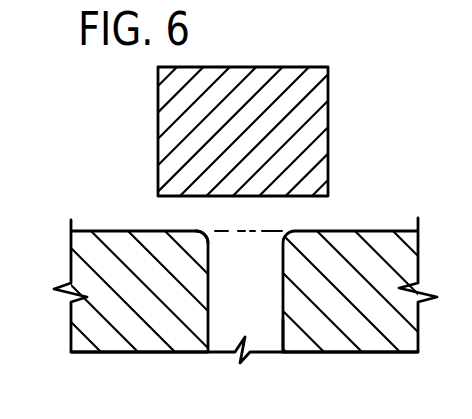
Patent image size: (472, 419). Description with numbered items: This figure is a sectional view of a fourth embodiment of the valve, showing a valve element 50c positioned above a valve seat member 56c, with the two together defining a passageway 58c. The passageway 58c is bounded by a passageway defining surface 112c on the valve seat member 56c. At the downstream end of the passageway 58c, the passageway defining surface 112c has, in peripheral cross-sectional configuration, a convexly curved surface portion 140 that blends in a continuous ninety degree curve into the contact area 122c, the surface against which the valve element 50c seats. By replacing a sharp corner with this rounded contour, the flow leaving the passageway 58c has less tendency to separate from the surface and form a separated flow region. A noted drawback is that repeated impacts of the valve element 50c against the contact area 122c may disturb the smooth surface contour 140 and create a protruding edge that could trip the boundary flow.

The valve element 50c is at (318, 118).
The contact area 122c is at (113, 230).
The valve seat member 56c is at (356, 247).
The convexly curved surface portion 140 is at (208, 230).
The passageway 58c is at (228, 328).
The passageway defining surface 112c is at (280, 325).